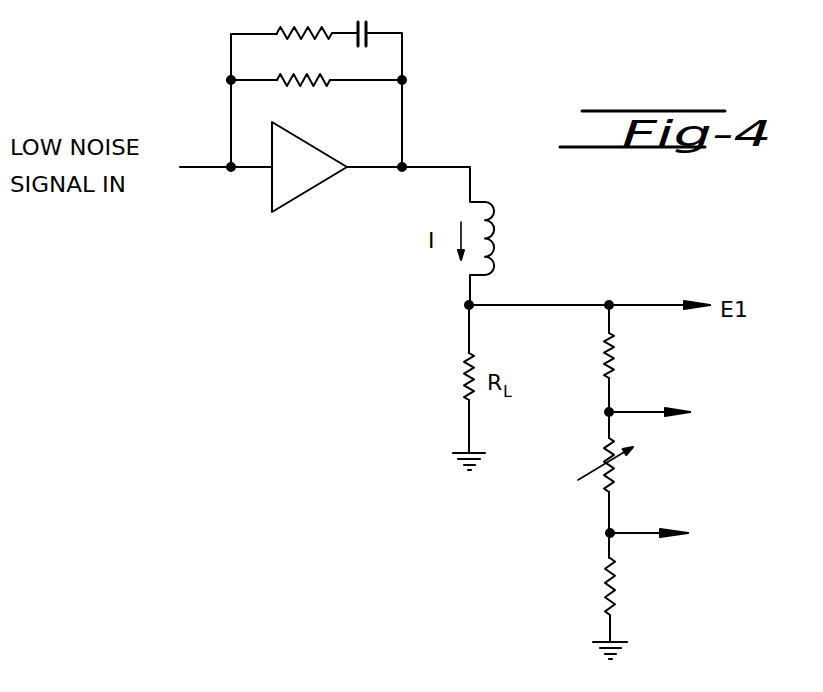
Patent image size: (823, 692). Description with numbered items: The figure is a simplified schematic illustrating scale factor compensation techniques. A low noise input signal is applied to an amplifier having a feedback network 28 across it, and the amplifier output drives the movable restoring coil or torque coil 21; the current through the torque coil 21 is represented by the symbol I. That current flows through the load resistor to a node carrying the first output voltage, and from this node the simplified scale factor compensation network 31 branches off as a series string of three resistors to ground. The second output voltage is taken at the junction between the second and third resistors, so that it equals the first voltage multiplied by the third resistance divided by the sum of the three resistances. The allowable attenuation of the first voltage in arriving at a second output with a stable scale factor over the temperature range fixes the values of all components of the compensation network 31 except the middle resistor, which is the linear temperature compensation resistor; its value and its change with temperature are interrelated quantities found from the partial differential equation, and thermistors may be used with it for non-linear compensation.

The feedback network of amplifier 28 is at (420, 84).
The torque coil 21 is at (492, 238).
The scale factor compensation network 31 is at (712, 614).